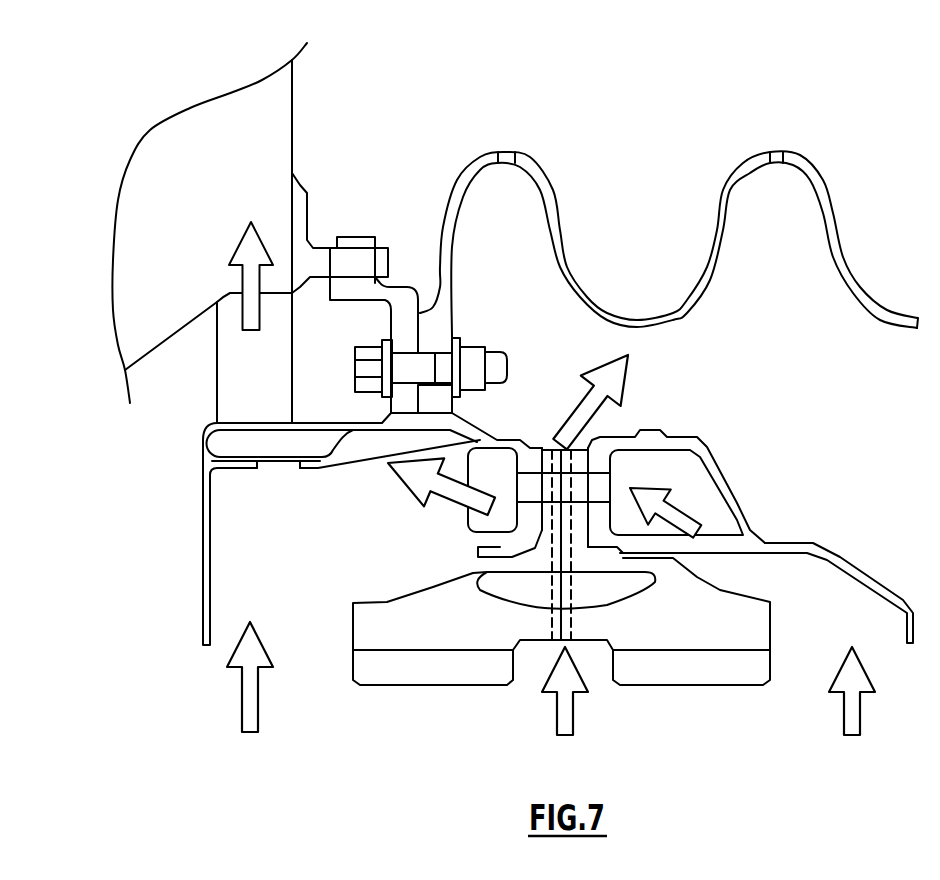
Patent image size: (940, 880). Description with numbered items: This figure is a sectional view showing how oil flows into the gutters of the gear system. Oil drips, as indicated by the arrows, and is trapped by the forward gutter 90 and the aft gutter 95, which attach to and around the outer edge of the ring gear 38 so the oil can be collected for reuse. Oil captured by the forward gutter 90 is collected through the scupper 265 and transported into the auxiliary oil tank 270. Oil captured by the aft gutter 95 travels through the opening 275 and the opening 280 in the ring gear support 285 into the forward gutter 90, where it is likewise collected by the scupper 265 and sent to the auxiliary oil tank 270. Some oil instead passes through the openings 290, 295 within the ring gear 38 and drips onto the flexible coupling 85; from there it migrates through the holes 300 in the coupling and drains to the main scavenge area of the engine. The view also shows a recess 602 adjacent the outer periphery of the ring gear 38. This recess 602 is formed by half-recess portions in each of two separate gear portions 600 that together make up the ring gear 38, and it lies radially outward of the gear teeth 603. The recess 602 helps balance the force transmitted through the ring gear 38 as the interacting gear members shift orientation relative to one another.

The ring gear 38 is at (451, 629).
The flexible coupling 85 is at (535, 167).
The forward gutter 90 is at (203, 532).
The aft gutter 95 is at (849, 555).
The scupper 265 is at (228, 446).
The auxiliary oil tank 270 is at (206, 194).
The opening 275 is at (707, 547).
The opening 280 is at (600, 492).
The ring gear support 285 is at (528, 520).
The opening 290 is at (553, 627).
The opening 295 is at (557, 465).
The holes 300 is at (505, 151).
The gear portions 600 is at (440, 587).
The recess 602 is at (487, 587).
The gear teeth 603 is at (393, 670).